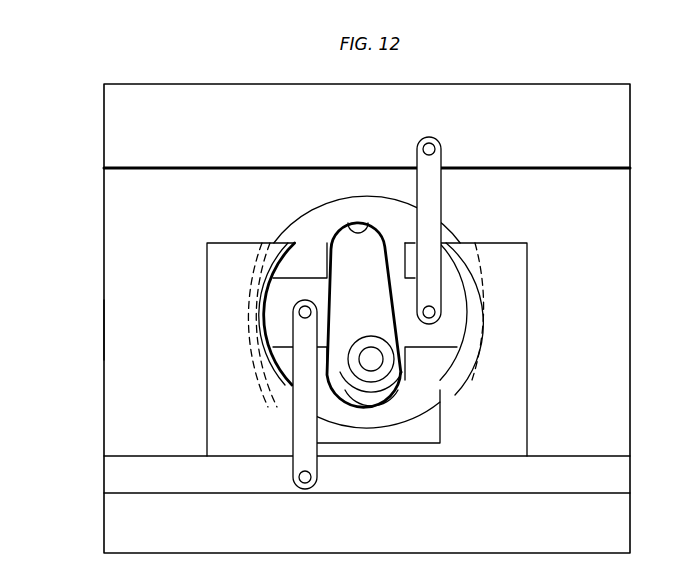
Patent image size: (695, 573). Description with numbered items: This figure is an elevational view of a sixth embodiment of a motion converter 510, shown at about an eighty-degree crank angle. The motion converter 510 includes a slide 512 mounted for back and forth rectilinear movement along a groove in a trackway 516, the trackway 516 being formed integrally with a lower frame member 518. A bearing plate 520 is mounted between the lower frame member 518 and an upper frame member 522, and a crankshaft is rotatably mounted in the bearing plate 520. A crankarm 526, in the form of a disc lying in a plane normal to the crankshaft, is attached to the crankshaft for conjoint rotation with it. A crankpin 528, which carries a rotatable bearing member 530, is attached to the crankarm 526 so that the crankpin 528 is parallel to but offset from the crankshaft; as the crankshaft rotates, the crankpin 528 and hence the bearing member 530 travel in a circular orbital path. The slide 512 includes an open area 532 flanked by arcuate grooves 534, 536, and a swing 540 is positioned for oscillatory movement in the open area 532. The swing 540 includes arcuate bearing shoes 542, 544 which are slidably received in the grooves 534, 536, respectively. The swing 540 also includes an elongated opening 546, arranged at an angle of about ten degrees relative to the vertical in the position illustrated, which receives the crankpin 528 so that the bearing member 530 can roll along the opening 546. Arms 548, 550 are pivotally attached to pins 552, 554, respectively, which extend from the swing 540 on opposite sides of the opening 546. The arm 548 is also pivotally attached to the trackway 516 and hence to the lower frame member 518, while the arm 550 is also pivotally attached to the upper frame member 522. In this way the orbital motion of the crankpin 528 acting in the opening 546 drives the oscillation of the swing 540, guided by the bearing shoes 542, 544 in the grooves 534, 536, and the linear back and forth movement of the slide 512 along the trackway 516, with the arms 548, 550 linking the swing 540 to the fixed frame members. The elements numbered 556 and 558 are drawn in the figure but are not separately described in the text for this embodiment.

The motion converter 510 is at (62, 108).
The slide 512 is at (527, 270).
The trackway 516 is at (162, 490).
The lower frame member 518 is at (617, 523).
The bearing plate 520 is at (104, 324).
The upper frame member 522 is at (588, 102).
The crankarm 526 is at (293, 227).
The crankpin 528 is at (376, 351).
The bearing member 530 is at (366, 378).
The open area 532 is at (408, 433).
The arcuate groove 534 is at (285, 398).
The arcuate groove 536 is at (470, 241).
The swing 540 is at (307, 280).
The arcuate bearing shoe 542 is at (265, 345).
The arcuate bearing shoe 544 is at (470, 331).
The elongated opening 546 is at (370, 256).
The arm 548 is at (298, 442).
The arm 550 is at (430, 197).
The pin 552 is at (290, 305).
The pin 554 is at (436, 311).
The slot end follower 556 is at (349, 226).
The hub flange 558 is at (378, 398).